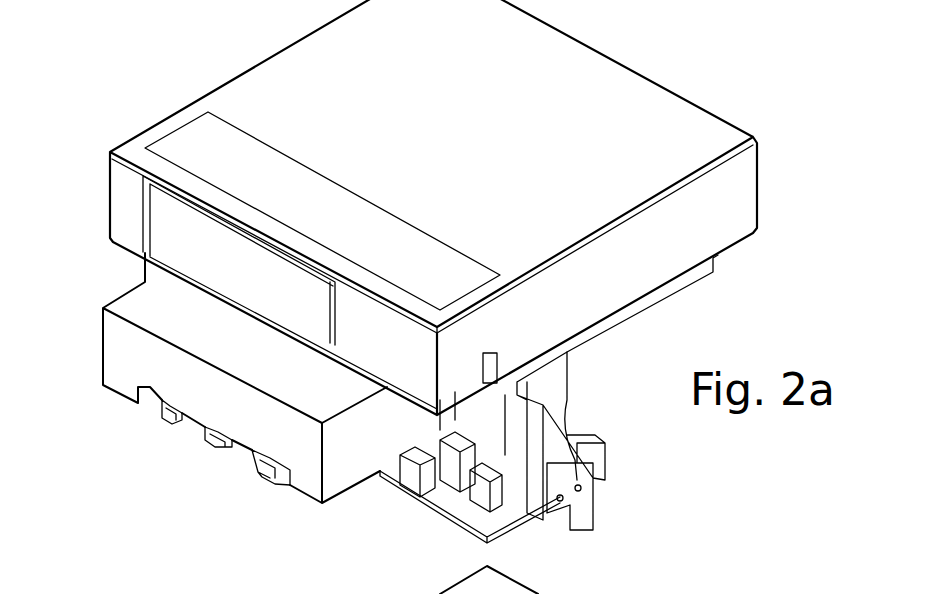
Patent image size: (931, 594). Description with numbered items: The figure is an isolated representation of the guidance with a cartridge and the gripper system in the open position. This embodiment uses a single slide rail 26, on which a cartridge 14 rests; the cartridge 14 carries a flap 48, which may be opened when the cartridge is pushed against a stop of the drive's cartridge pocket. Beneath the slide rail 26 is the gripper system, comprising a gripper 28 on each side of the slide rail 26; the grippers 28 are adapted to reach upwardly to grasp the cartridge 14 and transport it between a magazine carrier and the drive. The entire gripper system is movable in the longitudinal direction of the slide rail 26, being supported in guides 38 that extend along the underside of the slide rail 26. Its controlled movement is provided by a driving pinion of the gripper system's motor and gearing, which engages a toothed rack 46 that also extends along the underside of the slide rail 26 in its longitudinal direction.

The cartridge 14 is at (602, 130).
The slide rail 26 is at (282, 390).
The gripper 28 is at (557, 385).
The guides 38 is at (162, 420).
The toothed rack 46 is at (205, 445).
The flap 48 is at (182, 238).